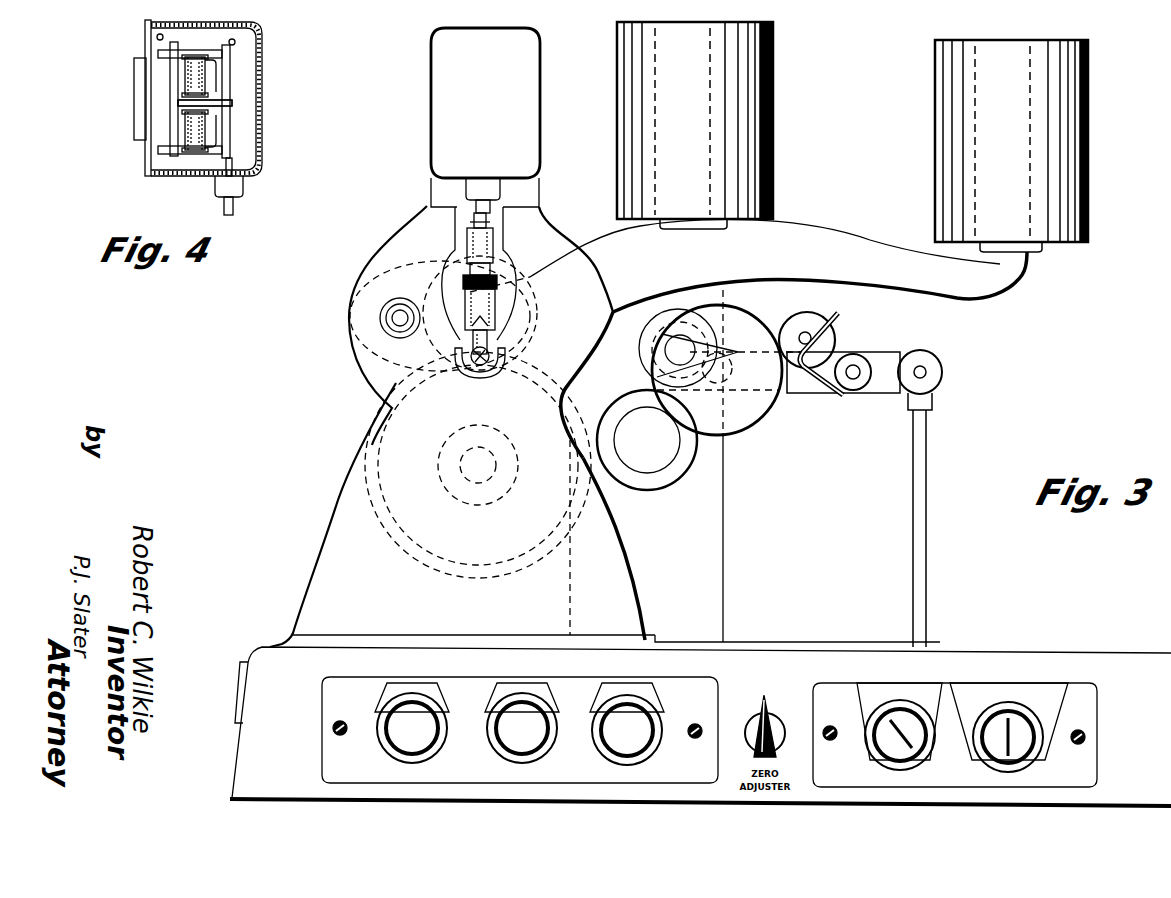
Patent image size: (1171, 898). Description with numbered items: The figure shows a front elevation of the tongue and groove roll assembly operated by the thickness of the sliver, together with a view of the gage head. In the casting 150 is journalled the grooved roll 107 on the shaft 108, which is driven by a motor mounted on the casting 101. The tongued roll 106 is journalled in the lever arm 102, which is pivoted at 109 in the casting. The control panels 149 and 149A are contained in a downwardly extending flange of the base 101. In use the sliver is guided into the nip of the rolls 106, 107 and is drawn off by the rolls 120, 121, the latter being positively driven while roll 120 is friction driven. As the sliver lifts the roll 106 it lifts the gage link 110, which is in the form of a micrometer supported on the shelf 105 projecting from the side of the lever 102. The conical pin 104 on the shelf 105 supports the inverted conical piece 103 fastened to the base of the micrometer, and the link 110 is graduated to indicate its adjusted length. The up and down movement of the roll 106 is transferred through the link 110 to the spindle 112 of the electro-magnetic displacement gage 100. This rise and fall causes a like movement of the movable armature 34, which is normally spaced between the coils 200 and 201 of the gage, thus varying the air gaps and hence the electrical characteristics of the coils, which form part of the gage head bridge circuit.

In FIG. 4, the movable armature 34 is at (185, 101).
In FIG. 4, the electro-magnetic displacement gage 100 is at (262, 85).
In FIG. 3, the electro-magnetic displacement gage 100 is at (520, 80).
In FIG. 3, the casting 101 is at (1030, 652).
In FIG. 3, the lever arm 102 is at (806, 233).
In FIG. 3, the inverted conical piece 103 is at (492, 310).
In FIG. 3, the conical pin 104 is at (489, 345).
In FIG. 3, the shelf 105 is at (477, 370).
In FIG. 3, the tongued roll 106 is at (452, 282).
In FIG. 3, the grooved roll 107 is at (376, 427).
In FIG. 3, the shaft 108 is at (482, 466).
In FIG. 3, the pivot 109 is at (398, 318).
In FIG. 3, the gage link 110 is at (470, 242).
In FIG. 4, the spindle 112 is at (233, 209).
In FIG. 3, the spindle 112 is at (478, 210).
In FIG. 3, the roll 120 is at (750, 410).
In FIG. 3, the roll 121 is at (660, 452).
In FIG. 3, the control panel 149 is at (322, 758).
In FIG. 3, the control panel 149A is at (1090, 762).
In FIG. 3, the casting 150 is at (322, 566).
In FIG. 4, the coil 200 is at (200, 75).
In FIG. 4, the coil 201 is at (200, 125).